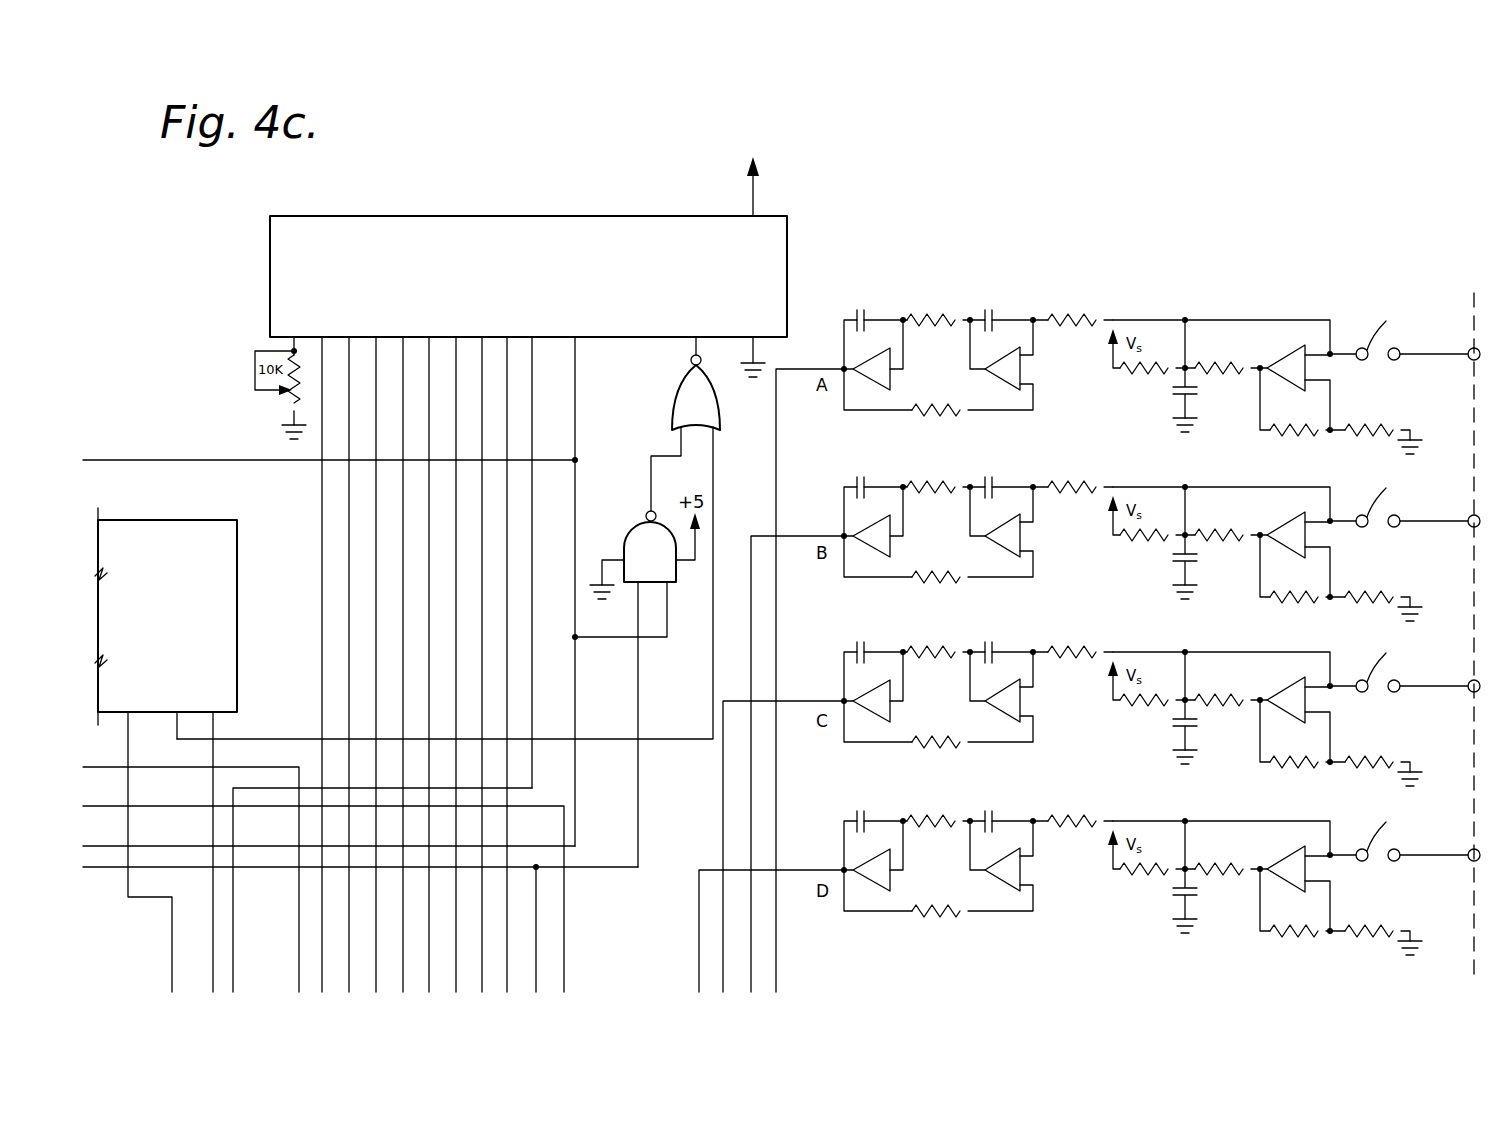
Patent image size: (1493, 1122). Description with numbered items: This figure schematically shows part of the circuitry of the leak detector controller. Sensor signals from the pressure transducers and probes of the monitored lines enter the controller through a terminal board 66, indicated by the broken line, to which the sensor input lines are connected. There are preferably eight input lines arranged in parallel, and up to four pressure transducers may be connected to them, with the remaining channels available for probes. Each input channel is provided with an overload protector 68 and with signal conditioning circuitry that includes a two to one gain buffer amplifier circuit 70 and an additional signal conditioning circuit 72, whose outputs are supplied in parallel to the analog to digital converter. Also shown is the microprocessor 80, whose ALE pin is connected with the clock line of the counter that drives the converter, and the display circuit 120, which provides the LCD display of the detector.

The display circuit 120 is at (446, 216).
The microprocessor 80 is at (228, 552).
The signal conditioning circuit 72 is at (1040, 268).
The two to one gain buffer amplifier circuit 70 is at (1318, 280).
The overload protector 68 is at (1405, 584).
The terminal board 66 is at (1476, 950).